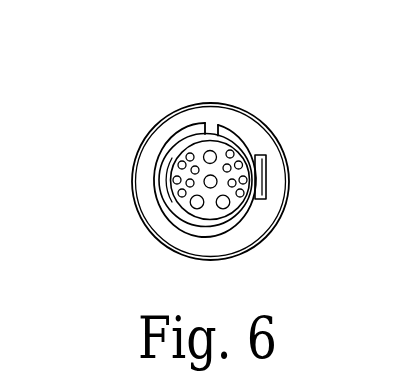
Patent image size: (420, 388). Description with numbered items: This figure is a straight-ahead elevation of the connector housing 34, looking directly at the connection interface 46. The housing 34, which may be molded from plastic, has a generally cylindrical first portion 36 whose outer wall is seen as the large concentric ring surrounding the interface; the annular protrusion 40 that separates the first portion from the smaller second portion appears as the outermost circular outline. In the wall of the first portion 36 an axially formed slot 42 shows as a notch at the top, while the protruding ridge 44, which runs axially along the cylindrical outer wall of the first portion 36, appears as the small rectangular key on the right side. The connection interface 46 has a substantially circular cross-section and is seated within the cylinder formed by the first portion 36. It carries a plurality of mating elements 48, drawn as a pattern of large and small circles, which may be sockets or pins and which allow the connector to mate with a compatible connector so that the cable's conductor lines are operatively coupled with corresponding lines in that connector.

The housing 34 is at (100, 99).
The first portion 36 is at (249, 143).
The annular protrusion 40 is at (131, 161).
The slot 42 is at (210, 127).
The protruding ridge 44 is at (268, 178).
The connection interface 46 is at (214, 216).
The mating elements 48 is at (207, 183).